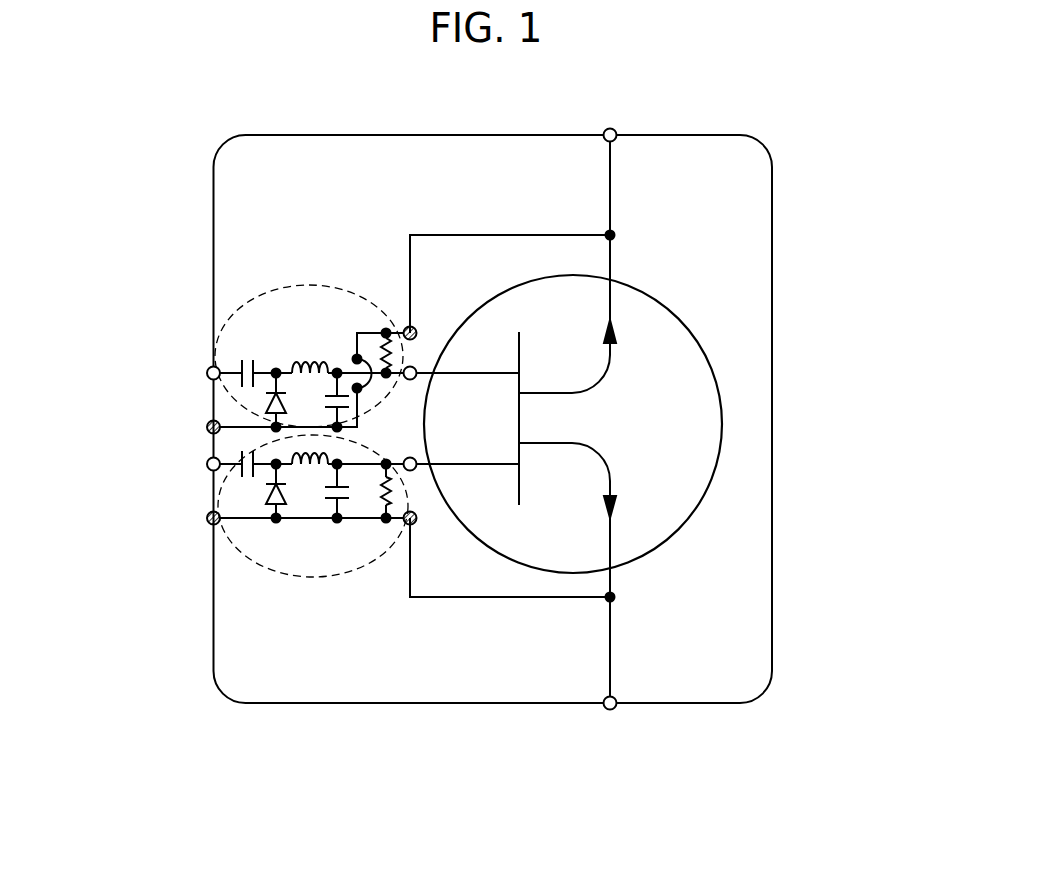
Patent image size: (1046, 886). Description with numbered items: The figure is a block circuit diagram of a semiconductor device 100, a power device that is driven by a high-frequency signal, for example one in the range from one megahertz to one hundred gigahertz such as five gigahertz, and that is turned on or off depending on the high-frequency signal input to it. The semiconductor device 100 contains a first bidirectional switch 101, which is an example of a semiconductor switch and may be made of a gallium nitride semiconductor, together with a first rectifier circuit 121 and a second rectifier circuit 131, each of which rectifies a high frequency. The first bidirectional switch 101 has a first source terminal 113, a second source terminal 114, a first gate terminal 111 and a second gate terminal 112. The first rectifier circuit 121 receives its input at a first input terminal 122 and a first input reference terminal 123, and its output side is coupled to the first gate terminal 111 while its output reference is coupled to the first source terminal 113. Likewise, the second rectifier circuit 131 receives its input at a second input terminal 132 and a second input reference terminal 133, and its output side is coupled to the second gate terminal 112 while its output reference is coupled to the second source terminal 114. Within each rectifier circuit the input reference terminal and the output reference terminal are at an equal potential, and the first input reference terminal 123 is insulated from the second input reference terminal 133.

The semiconductor device 100 is at (280, 703).
The first bidirectional switch 101 is at (709, 361).
The first gate terminal 111 is at (415, 367).
The second gate terminal 112 is at (414, 471).
The first source terminal 113 is at (615, 130).
The second source terminal 114 is at (610, 710).
The first rectifier circuit 121 is at (277, 288).
The first input terminal 122 is at (207, 373).
The first input reference terminal 123 is at (207, 427).
The second rectifier circuit 131 is at (282, 573).
The second input terminal 132 is at (207, 464).
The second input reference terminal 133 is at (207, 518).